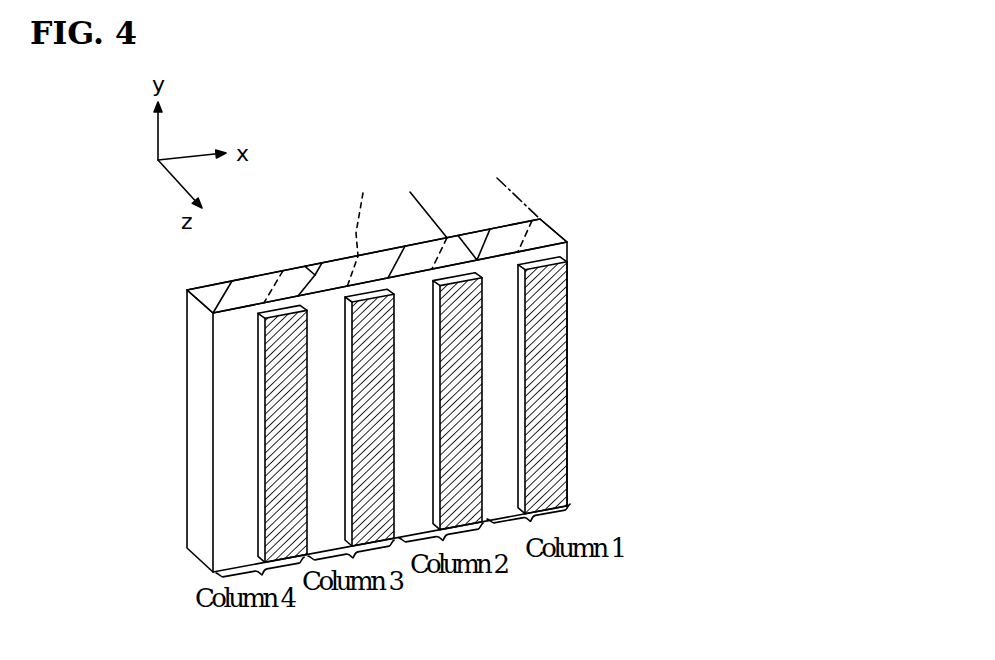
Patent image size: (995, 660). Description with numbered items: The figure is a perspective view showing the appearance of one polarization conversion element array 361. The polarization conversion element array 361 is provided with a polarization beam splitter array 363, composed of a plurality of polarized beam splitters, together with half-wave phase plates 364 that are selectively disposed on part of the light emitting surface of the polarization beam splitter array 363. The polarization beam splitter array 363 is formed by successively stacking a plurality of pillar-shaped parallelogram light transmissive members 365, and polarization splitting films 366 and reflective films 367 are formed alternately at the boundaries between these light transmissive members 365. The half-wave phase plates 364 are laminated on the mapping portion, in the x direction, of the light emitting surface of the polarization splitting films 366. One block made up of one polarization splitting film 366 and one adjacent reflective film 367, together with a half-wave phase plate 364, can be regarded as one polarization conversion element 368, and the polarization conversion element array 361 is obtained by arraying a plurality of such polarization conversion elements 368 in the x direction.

The polarization conversion element array 361 is at (604, 181).
The polarization beam splitter array 363 is at (562, 227).
The λ/2 phase plate 364 is at (569, 472).
The light transmissive member 365 is at (318, 266).
The polarization splitting film 366 is at (366, 228).
The reflective film 367 is at (300, 264).
The polarization conversion element 368 is at (496, 176).